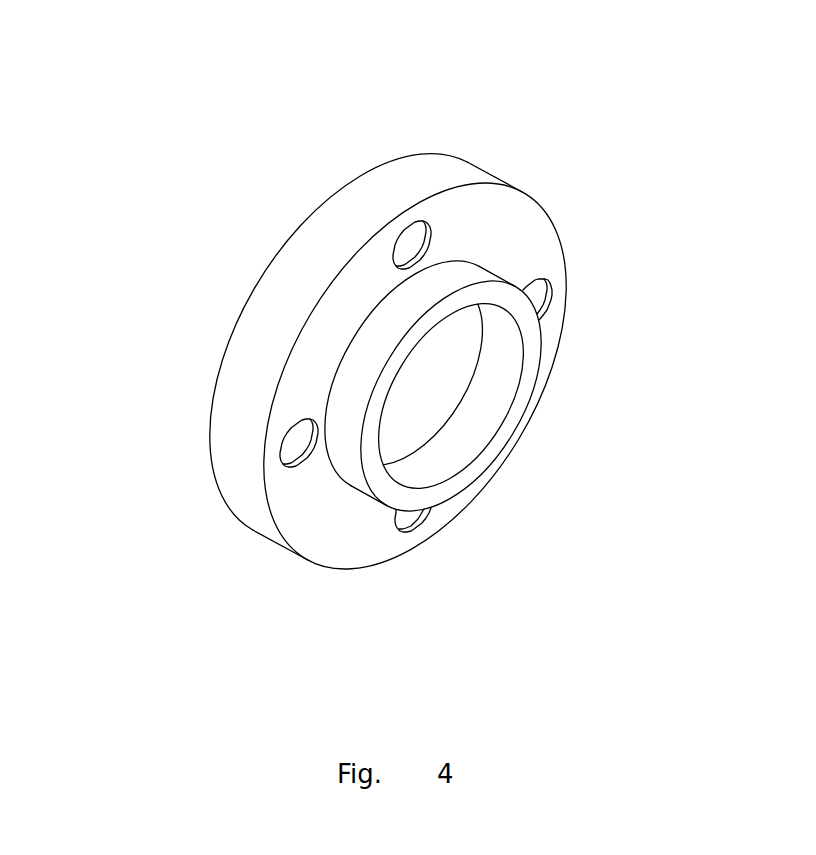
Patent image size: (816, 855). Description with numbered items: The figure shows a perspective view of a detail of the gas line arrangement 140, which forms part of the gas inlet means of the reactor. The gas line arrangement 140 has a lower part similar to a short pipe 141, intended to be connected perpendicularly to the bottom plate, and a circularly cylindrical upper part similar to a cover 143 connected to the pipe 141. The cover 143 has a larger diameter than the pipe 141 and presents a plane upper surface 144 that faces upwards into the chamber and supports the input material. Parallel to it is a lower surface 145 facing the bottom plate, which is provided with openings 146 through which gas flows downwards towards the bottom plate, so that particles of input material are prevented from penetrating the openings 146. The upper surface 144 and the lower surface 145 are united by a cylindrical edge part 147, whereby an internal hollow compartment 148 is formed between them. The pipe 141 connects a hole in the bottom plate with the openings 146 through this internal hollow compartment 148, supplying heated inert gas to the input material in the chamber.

The gas line arrangement 140 is at (322, 163).
The pipe 141 is at (460, 277).
The cover 143 is at (423, 172).
The upper surface 144 is at (252, 278).
The lower surface 145 is at (322, 522).
The openings 146 is at (295, 442).
The cylindrical edge part 147 is at (233, 462).
The internal hollow compartment 148 is at (425, 382).